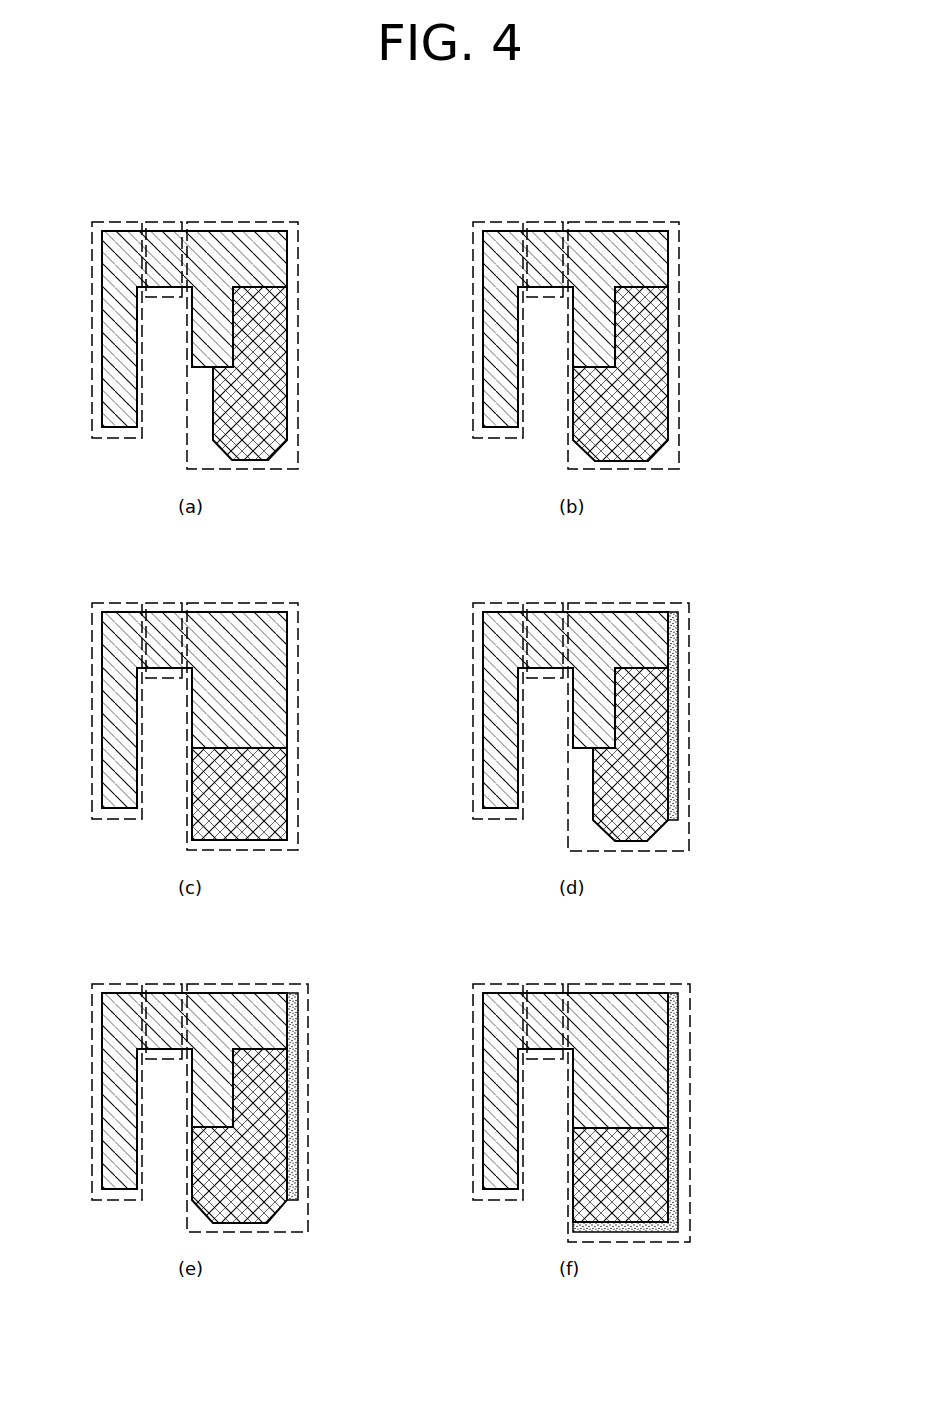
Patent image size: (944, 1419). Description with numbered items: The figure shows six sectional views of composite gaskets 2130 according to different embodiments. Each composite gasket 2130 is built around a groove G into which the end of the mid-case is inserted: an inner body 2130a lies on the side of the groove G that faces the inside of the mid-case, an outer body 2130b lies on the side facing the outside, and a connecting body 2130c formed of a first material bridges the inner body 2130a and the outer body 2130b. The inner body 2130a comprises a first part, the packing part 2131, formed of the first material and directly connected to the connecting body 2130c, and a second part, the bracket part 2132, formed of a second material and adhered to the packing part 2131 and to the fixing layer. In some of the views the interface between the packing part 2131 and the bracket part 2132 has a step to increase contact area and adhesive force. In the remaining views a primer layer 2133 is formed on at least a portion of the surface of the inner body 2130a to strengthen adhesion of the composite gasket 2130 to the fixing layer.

The composite gasket 2130 is at (384, 291).
The inner body 2130a is at (438, 704).
The outer body 2130b is at (304, 683).
The connecting body 2130c is at (366, 613).
The packing part 2131 is at (270, 260).
The bracket part 2132 is at (272, 380).
The primer layer 2133 is at (518, 922).
The groove G is at (349, 822).